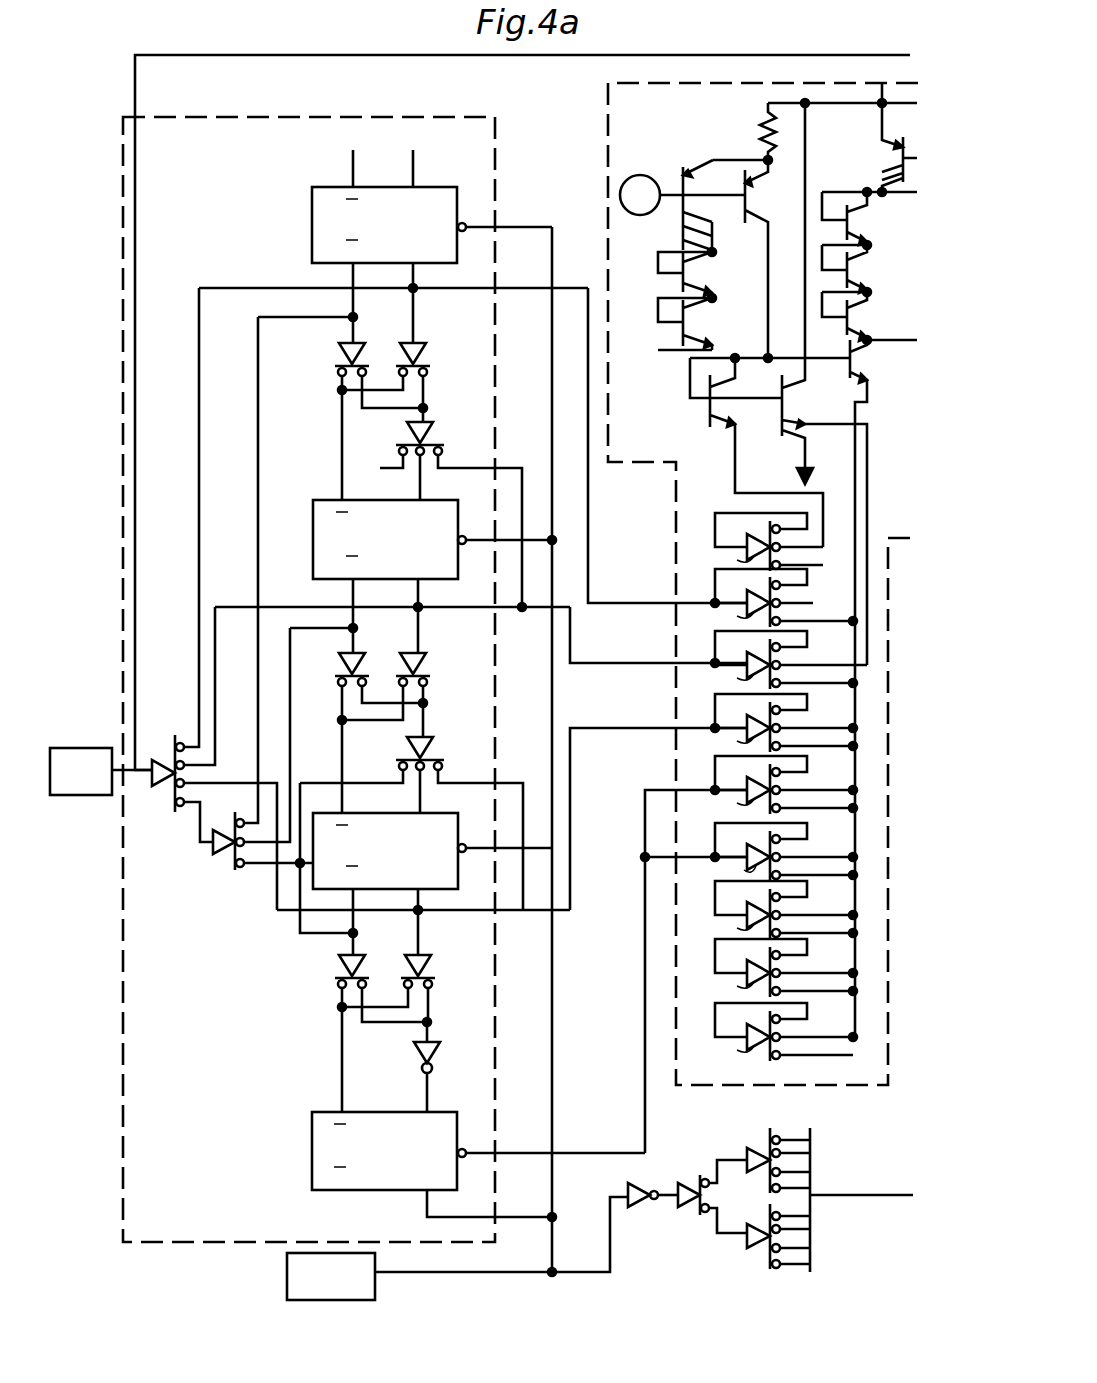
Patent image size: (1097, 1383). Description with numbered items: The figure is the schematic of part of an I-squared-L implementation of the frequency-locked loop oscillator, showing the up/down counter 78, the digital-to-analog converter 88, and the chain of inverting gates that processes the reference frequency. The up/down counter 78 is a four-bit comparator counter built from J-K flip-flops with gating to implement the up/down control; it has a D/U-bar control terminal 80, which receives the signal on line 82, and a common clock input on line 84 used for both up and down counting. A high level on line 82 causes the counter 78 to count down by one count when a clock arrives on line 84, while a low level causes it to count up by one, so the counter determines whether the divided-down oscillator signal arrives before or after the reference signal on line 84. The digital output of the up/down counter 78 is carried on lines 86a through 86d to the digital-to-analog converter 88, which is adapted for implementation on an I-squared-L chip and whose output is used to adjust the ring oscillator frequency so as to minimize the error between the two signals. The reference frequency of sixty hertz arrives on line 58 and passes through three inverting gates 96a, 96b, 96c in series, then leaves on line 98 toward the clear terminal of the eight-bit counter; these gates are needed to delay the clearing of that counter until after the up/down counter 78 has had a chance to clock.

The line 58 is at (414, 1273).
The up/down counter 78 is at (160, 117).
The down or up control terminal 80 is at (84, 753).
The line 82 is at (360, 58).
The line 84 is at (553, 1243).
The line 86a is at (600, 603).
The line 86d is at (682, 858).
The digital-to-analog converter 88 is at (607, 182).
The inverting gate 96a is at (627, 1188).
The inverting gate 96b is at (692, 1183).
The inverting gate 96c is at (748, 1160).
The line 98 is at (882, 1195).